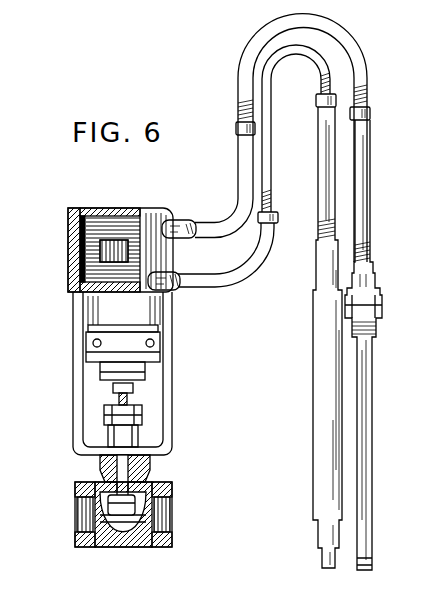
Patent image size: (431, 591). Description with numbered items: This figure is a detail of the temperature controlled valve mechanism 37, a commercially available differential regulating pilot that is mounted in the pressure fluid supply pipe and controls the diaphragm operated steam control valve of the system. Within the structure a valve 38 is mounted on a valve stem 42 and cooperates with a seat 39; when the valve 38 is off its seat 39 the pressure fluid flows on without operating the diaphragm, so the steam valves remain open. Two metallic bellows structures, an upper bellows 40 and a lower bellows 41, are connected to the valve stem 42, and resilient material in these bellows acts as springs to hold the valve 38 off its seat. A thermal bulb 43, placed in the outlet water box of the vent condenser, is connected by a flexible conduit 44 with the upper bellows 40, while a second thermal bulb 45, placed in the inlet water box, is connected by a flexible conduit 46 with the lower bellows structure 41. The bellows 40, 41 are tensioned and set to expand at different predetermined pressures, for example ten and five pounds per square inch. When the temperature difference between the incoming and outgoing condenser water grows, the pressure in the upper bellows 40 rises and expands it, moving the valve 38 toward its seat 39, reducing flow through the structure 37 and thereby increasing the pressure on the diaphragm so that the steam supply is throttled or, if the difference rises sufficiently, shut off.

The temperature controlled valve mechanism 37 is at (153, 480).
The valve 38 is at (142, 502).
The seat 39 is at (133, 517).
The upper bellows structure 40 is at (70, 226).
The lower bellows structure 41 is at (74, 282).
The valve stem 42 is at (85, 252).
The thermal bulb 43 is at (366, 458).
The flexible conduit 44 is at (364, 66).
The second thermal bulb 45 is at (323, 443).
The flexible conduit 46 is at (245, 287).